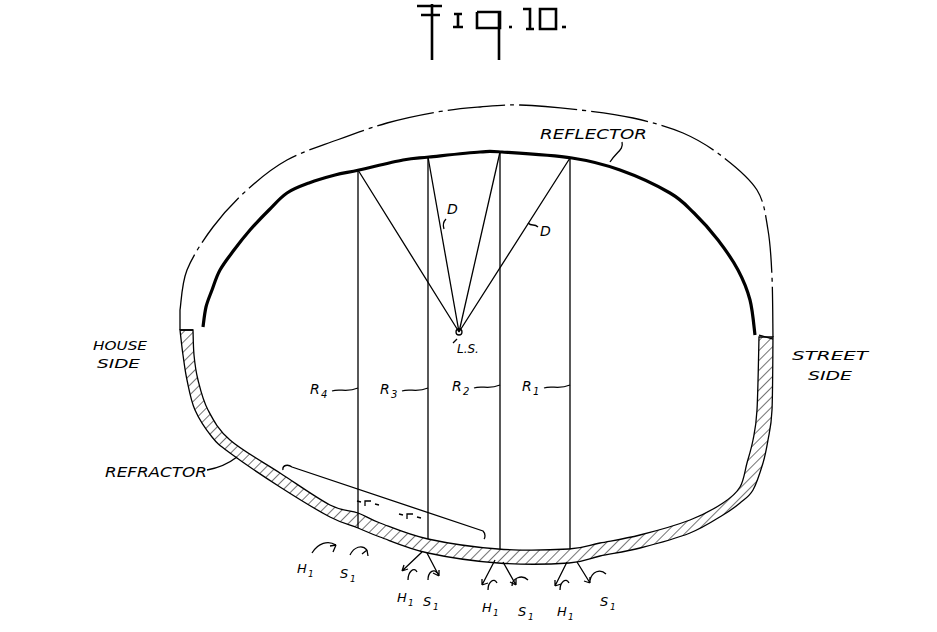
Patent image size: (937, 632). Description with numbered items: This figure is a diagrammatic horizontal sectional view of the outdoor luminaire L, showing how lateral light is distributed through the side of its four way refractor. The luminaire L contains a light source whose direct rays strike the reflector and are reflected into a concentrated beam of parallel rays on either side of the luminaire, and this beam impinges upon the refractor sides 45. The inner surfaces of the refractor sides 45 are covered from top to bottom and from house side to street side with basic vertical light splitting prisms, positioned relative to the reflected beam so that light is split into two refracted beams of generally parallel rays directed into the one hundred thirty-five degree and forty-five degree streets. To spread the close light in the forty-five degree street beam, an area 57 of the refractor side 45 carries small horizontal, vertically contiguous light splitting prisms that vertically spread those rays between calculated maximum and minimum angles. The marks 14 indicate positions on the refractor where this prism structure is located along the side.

The refractor prisms 14 is at (373, 493).
The area of the refractor side 57 is at (463, 526).
The refractor sides 45 is at (691, 538).
The luminaire L is at (223, 492).